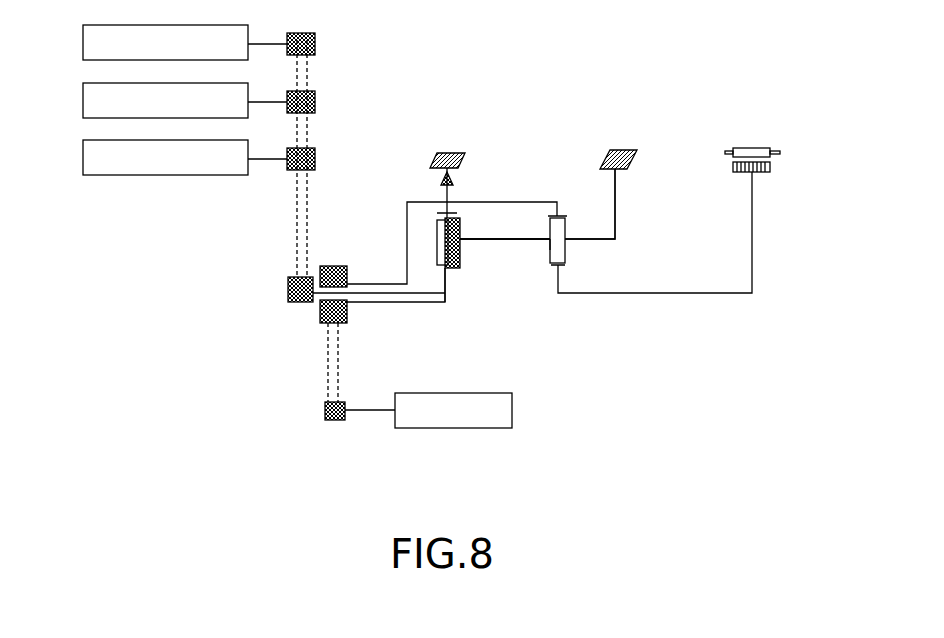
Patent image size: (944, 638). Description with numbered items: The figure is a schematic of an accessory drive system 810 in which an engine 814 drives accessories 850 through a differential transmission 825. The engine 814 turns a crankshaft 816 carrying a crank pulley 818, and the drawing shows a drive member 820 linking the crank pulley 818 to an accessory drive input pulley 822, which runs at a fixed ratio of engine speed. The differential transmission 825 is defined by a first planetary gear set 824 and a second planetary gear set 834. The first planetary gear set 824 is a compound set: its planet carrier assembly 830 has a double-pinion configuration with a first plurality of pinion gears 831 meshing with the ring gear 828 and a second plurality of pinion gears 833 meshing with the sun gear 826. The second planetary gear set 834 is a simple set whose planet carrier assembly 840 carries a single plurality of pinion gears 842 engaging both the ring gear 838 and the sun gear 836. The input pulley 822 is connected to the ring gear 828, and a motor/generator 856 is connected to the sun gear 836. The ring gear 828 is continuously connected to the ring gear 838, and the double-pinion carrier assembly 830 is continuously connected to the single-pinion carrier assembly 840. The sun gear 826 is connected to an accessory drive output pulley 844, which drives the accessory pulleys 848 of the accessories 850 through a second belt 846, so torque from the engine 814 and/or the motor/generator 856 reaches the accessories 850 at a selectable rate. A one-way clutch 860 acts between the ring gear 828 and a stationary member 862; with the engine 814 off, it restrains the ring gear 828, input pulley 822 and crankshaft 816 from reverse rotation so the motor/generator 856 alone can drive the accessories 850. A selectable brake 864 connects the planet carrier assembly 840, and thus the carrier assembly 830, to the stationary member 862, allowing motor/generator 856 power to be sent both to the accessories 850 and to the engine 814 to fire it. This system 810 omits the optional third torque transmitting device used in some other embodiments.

The accessory drive system 810 is at (762, 50).
The engine 814 is at (485, 428).
The crankshaft 816 is at (376, 412).
The crank pulley 818 is at (325, 410).
The drive shaft 820 is at (311, 353).
The accessory drive input pulley 822 is at (320, 314).
The first planetary gear set 824 is at (484, 277).
The differential transmission 825 is at (752, 378).
The sun gear 826 is at (445, 272).
The ring gear 828 is at (440, 210).
The planet carrier assembly 830 is at (469, 242).
The first plurality of pinion gears 831 is at (437, 228).
The second plurality of pinion gears 833 is at (462, 226).
The second planetary gear set 834 is at (622, 273).
The sun gear 836 is at (553, 267).
The ring gear 838 is at (560, 214).
The planet carrier assembly 840 is at (600, 242).
The pinion gears 842 is at (550, 247).
The accessory drive output pulley 844 is at (288, 290).
The second belt 846 is at (273, 210).
The accessory pulleys 848 is at (317, 47).
The accessories 850 is at (83, 43).
The motor/generator 856 is at (762, 134).
The one-way clutch 860 is at (490, 168).
The stationary member 862 is at (450, 140).
The selectable brake 864 is at (626, 170).